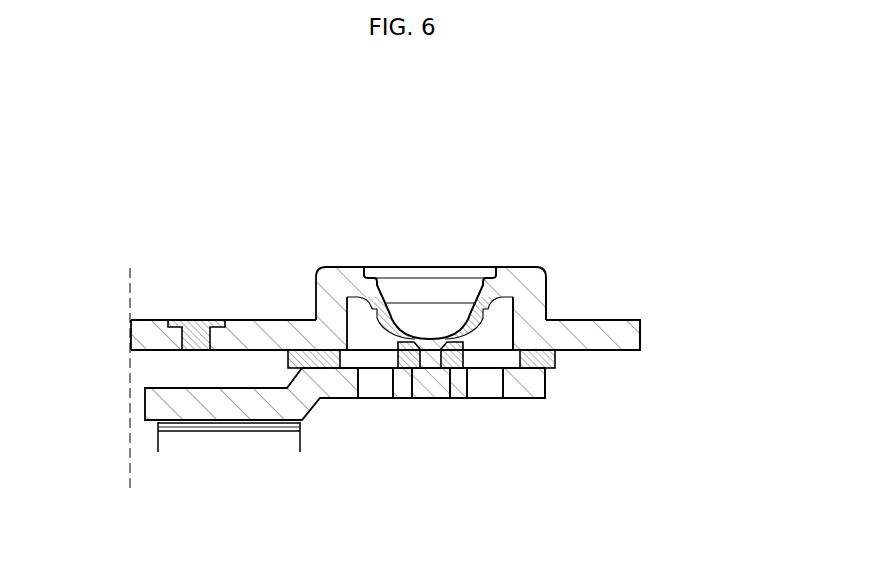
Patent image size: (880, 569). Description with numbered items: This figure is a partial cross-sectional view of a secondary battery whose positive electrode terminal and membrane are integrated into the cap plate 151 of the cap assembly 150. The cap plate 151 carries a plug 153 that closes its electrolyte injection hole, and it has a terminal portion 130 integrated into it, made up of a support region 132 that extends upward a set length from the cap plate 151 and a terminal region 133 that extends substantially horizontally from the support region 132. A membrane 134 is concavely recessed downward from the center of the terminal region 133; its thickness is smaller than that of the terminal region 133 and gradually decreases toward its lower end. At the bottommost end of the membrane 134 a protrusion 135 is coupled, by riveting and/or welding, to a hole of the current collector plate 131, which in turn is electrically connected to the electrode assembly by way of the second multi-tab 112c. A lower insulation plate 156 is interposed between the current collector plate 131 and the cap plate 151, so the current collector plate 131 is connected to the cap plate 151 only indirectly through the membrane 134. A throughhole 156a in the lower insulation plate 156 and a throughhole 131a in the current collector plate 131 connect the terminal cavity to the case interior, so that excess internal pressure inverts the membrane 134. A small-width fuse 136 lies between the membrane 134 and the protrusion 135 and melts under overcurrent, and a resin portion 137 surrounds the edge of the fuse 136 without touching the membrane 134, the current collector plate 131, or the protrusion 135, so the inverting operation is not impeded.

The second multi-tab 112c is at (227, 442).
The terminal portion 130 is at (545, 207).
The current collector plate 131 is at (158, 404).
The throughhole 131a is at (483, 395).
The support region 132 is at (538, 300).
The terminal region 133 is at (508, 266).
The membrane 134 is at (423, 287).
The protrusion 135 is at (440, 365).
The fuse 136 is at (402, 412).
The resin portion 137 is at (402, 352).
The cap assembly 150 is at (655, 280).
The cap plate 151 is at (655, 334).
The plug 153 is at (189, 320).
The lower insulation plate 156 is at (557, 363).
The throughhole 156a is at (523, 398).